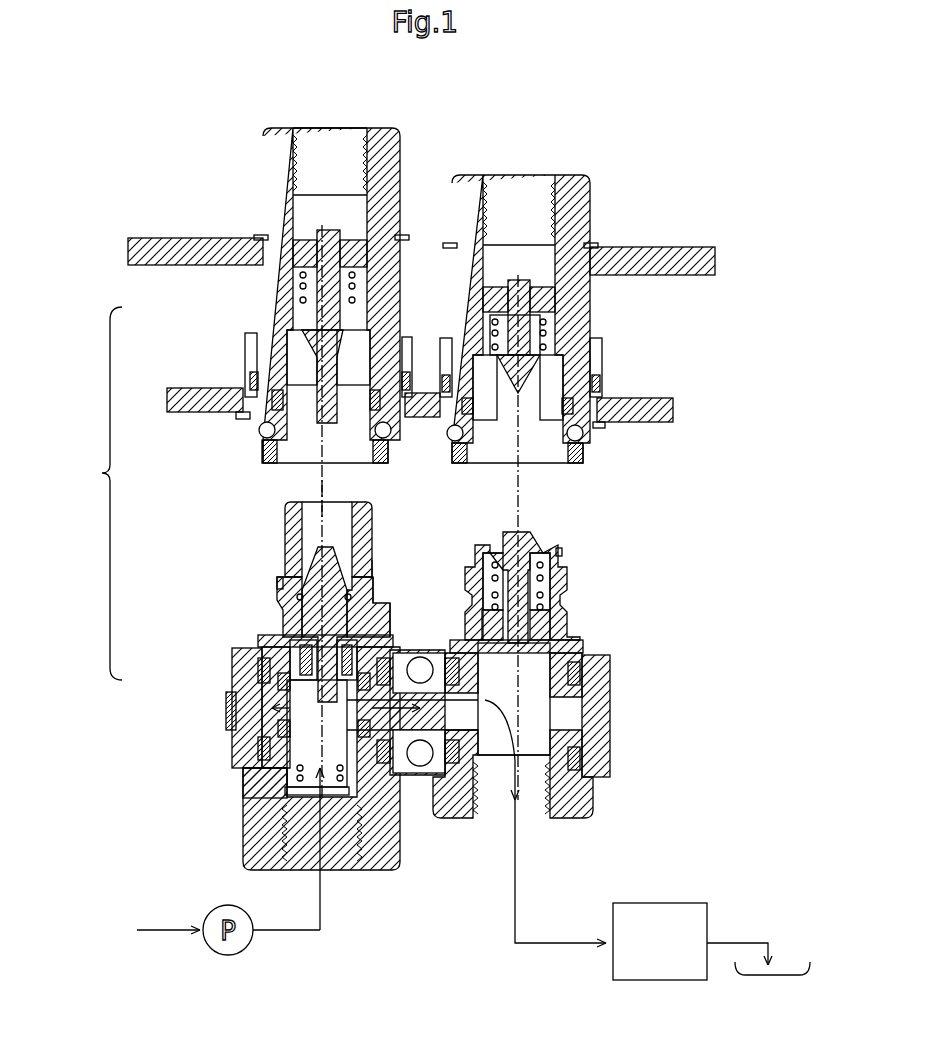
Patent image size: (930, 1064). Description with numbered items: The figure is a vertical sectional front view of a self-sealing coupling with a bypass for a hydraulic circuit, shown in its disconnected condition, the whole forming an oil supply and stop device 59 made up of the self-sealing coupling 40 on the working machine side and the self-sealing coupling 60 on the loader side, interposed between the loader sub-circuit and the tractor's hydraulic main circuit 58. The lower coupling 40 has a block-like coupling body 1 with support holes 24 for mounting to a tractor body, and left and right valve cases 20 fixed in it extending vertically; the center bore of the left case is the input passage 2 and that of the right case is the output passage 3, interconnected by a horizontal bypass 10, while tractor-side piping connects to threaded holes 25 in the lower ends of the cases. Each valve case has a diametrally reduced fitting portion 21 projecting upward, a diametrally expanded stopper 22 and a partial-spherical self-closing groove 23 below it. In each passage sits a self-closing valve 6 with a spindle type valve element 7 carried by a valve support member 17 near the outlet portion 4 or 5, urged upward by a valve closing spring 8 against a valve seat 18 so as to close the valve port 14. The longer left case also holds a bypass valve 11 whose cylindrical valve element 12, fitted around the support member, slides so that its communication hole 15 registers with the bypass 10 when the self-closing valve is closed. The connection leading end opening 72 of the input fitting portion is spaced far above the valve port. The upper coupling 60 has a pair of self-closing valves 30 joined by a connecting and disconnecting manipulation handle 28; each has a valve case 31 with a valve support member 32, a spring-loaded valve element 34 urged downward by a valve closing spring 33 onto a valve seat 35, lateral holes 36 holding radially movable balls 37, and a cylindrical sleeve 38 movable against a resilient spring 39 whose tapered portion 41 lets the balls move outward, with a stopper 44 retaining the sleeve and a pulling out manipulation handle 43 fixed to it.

The coupling body 1 is at (612, 705).
The input passage 2 is at (345, 840).
The output passage 3 is at (528, 792).
The outlet portion 4 is at (344, 503).
The outlet portion 5 is at (490, 555).
The self-closing valve 6 is at (312, 540).
The valve element 7 is at (308, 567).
The valve closing spring 8 is at (285, 772).
The bypass 10 is at (413, 732).
The bypass valve 11 is at (240, 678).
The cylindrical valve element 12 is at (258, 634).
The valve port 14 is at (316, 652).
The communication hole 15 is at (300, 690).
The valve support member 17 is at (352, 628).
The valve seat 18 is at (280, 590).
The valve case 20 is at (278, 614).
The fitting portion 21 is at (375, 528).
The stopper 22 is at (380, 578).
The self-closing groove 23 is at (392, 600).
The support hole 24 is at (440, 776).
The threaded hole 25 is at (352, 850).
The connecting and disconnecting manipulation handle 28 is at (178, 238).
The self-closing valve 30 is at (258, 304).
The valve case 31 is at (395, 318).
The valve support member 32 is at (352, 240).
The valve closing spring 33 is at (362, 300).
The valve element 34 is at (318, 340).
The valve seat 35 is at (350, 340).
The lateral hole 36 is at (283, 402).
The ball 37 is at (262, 452).
The cylindrical sleeve 38 is at (250, 380).
The resilient spring 39 is at (247, 375).
The self-sealing coupling 40 is at (190, 660).
The tapered portion 41 is at (259, 432).
The pulling out manipulation handle 43 is at (180, 412).
The stopper 44 is at (258, 455).
The hydraulic main circuit 58 is at (711, 941).
The oil supply and stop device 59 is at (397, 500).
The self-sealing coupling 60 is at (188, 319).
The connection leading end opening 72 is at (316, 500).